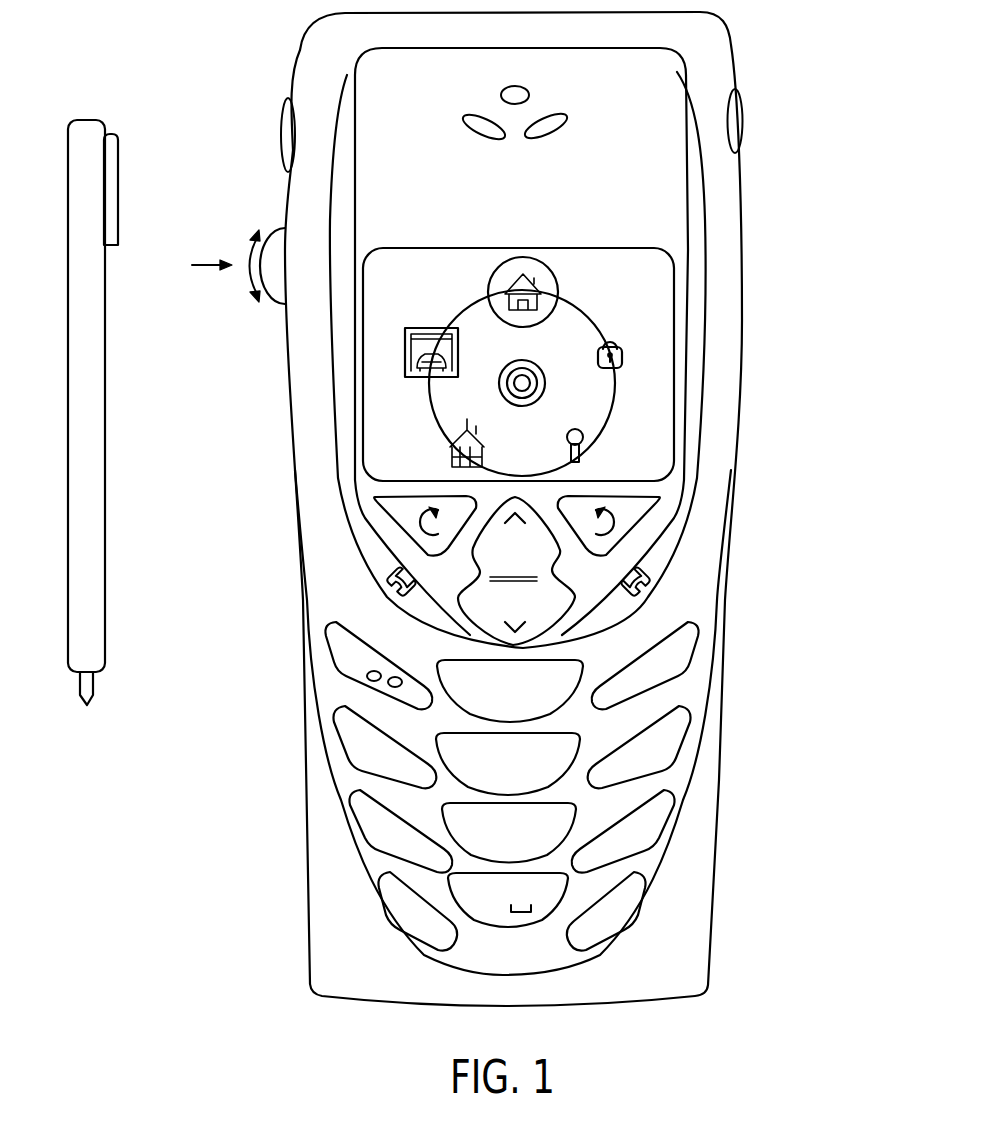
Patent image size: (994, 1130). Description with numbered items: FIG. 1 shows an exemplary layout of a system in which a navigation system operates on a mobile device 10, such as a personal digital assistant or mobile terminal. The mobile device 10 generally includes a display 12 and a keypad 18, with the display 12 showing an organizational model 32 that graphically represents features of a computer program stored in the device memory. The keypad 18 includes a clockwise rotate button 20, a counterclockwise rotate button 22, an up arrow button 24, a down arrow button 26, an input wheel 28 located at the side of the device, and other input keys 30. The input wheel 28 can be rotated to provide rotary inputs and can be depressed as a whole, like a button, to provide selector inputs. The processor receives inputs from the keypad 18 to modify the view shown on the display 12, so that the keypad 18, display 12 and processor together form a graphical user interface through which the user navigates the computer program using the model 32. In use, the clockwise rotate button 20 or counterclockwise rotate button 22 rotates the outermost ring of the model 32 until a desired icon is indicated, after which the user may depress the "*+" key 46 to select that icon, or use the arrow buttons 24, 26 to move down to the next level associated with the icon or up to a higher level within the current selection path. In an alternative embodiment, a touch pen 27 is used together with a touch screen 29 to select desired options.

The mobile device 10 is at (749, 81).
The display 12 is at (654, 285).
The keypad 18 is at (341, 590).
The clockwise rotate button 20 is at (380, 500).
The counterclockwise rotate button 22 is at (650, 502).
The up arrow button 24 is at (520, 545).
The down arrow button 26 is at (490, 607).
The touch pen 27 is at (84, 130).
The input wheel 28 is at (278, 293).
The touch screen 29 is at (430, 262).
The other input keys 30 is at (659, 777).
The organizational model 32 is at (640, 411).
The "*+" key 46 is at (400, 893).